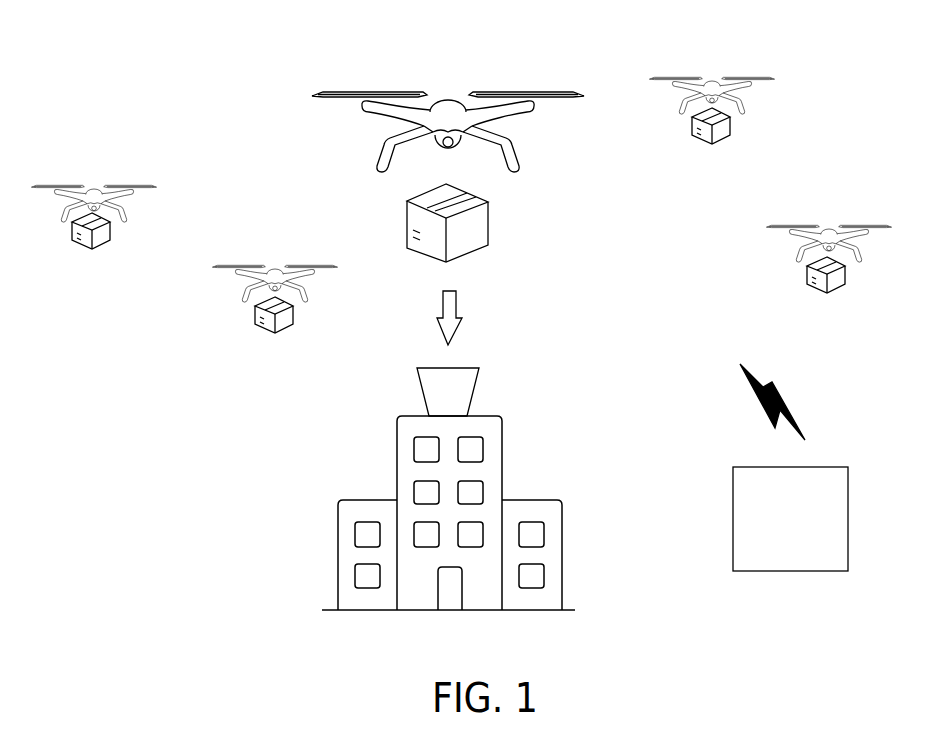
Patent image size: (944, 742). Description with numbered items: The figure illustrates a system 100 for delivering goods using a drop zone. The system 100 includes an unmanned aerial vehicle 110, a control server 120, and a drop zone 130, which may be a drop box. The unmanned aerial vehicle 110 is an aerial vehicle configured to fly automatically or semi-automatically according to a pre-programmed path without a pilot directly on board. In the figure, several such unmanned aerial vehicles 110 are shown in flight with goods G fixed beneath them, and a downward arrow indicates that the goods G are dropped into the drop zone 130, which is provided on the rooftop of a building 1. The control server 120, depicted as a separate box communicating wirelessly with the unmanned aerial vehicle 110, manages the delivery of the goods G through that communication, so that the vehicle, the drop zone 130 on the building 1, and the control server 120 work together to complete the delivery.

The system for delivering goods using a drop zone 100 is at (107, 35).
The unmanned aerial vehicle 110 is at (450, 98).
The goods G is at (477, 233).
The drop zone 130 is at (467, 383).
The building 1 is at (396, 470).
The control server 120 is at (732, 520).